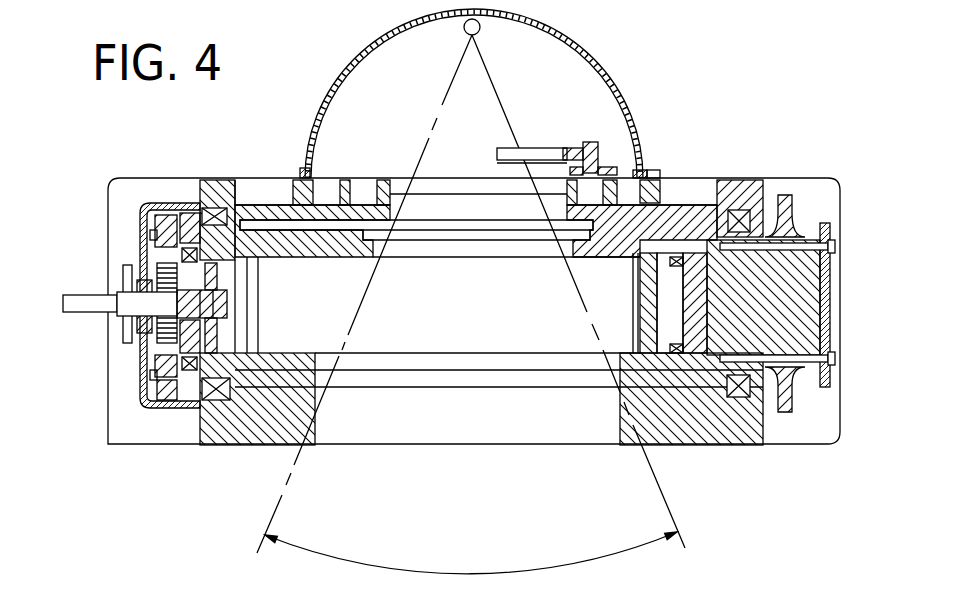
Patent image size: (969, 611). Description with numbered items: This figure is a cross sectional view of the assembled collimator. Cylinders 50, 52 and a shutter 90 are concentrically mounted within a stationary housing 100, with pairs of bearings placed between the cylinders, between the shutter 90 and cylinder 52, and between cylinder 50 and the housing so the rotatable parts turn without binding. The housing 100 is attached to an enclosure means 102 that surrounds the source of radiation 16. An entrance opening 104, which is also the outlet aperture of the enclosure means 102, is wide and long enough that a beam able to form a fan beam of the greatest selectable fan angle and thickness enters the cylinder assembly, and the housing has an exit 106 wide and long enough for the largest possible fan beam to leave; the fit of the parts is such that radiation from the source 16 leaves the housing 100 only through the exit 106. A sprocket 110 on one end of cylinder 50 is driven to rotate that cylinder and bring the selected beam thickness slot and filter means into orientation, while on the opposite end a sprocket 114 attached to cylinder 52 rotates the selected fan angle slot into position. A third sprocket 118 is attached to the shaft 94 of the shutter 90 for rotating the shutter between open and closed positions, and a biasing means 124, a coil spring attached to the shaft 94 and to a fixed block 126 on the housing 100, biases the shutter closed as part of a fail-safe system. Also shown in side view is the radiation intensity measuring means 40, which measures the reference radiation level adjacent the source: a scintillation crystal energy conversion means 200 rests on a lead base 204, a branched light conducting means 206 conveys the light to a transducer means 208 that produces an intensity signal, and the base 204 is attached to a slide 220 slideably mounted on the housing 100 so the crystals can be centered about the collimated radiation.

The source of radiation 16 is at (480, 30).
The enclosure means 102 is at (597, 52).
The radiation intensity measuring means 40 is at (532, 120).
The radiation sensitive energy conversion means 200 is at (532, 132).
The lead base 204 is at (567, 163).
The branched light conducting means 206 is at (555, 138).
The transducer means 208 is at (558, 80).
The entrance opening 104 is at (380, 212).
The exit 106 is at (643, 447).
The cylinder 52 is at (630, 250).
The shutter 90 is at (663, 267).
The sprocket 110 is at (767, 235).
The cylinder 50 is at (732, 295).
The stationary housing 100 is at (820, 428).
The slide 220 is at (593, 182).
The biasing means 124 is at (163, 270).
The third sprocket 118 is at (128, 285).
The shaft 94 is at (97, 312).
The fixed block 126 is at (142, 370).
The sprocket 114 is at (160, 383).